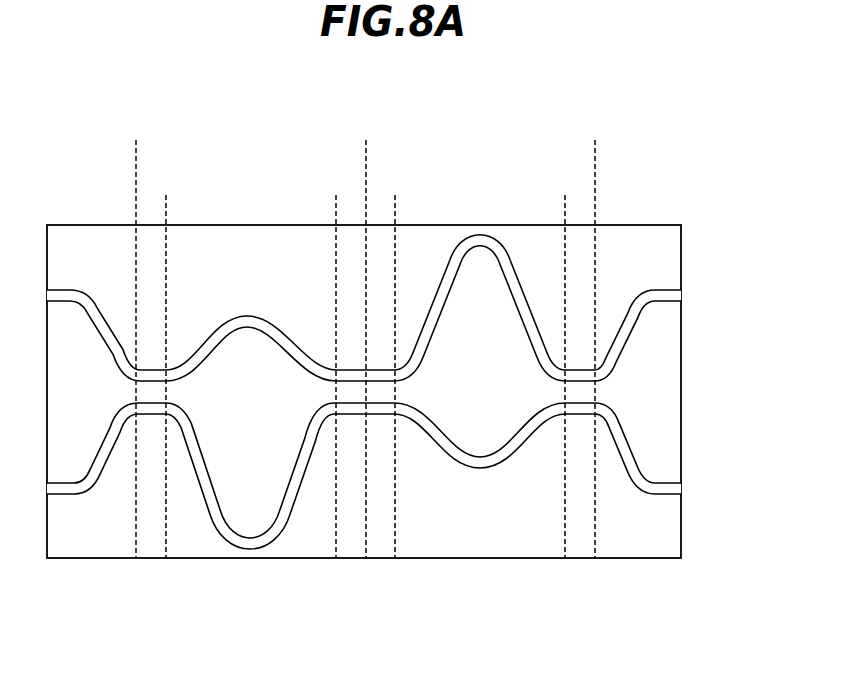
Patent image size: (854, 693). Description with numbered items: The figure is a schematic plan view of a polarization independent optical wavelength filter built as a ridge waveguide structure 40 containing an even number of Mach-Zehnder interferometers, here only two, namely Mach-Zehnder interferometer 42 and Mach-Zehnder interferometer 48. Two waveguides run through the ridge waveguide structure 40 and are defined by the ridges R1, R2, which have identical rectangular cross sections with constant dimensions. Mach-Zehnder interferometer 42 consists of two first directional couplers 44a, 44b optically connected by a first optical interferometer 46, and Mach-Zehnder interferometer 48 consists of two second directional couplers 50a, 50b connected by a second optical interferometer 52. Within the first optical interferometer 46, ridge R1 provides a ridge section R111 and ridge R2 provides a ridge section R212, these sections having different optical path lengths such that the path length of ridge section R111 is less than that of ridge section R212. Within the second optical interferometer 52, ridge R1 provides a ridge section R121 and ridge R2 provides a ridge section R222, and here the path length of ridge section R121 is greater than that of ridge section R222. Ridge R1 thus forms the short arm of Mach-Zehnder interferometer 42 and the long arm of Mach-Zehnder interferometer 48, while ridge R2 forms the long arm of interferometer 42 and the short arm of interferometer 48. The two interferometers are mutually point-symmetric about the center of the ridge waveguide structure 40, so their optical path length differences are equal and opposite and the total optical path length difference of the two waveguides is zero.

The ridge waveguide structure 40 is at (225, 109).
The Mach-Zehnder interferometer 42 is at (366, 154).
The Mach-Zehnder interferometer 48 is at (595, 154).
The first directional coupler 44a is at (137, 200).
The first optical interferometer 46 is at (336, 200).
The first directional coupler 44b is at (366, 200).
The second directional coupler 50a is at (366, 200).
The second optical interferometer 52 is at (395, 200).
The second directional coupler 50b is at (595, 200).
The ridge R1 is at (682, 297).
The ridge R2 is at (682, 491).
The ridge section R111 is at (247, 318).
The ridge section R212 is at (267, 541).
The ridge section R121 is at (431, 316).
The ridge section R222 is at (480, 464).